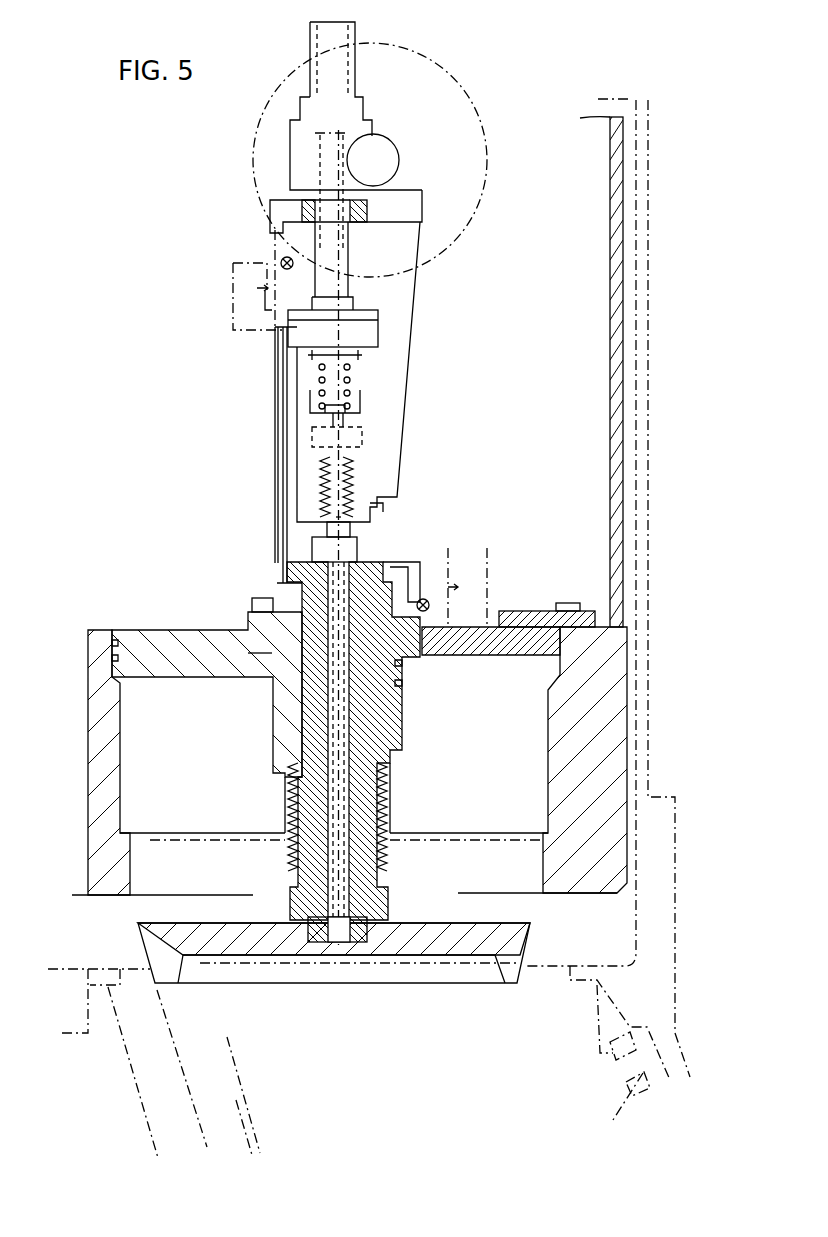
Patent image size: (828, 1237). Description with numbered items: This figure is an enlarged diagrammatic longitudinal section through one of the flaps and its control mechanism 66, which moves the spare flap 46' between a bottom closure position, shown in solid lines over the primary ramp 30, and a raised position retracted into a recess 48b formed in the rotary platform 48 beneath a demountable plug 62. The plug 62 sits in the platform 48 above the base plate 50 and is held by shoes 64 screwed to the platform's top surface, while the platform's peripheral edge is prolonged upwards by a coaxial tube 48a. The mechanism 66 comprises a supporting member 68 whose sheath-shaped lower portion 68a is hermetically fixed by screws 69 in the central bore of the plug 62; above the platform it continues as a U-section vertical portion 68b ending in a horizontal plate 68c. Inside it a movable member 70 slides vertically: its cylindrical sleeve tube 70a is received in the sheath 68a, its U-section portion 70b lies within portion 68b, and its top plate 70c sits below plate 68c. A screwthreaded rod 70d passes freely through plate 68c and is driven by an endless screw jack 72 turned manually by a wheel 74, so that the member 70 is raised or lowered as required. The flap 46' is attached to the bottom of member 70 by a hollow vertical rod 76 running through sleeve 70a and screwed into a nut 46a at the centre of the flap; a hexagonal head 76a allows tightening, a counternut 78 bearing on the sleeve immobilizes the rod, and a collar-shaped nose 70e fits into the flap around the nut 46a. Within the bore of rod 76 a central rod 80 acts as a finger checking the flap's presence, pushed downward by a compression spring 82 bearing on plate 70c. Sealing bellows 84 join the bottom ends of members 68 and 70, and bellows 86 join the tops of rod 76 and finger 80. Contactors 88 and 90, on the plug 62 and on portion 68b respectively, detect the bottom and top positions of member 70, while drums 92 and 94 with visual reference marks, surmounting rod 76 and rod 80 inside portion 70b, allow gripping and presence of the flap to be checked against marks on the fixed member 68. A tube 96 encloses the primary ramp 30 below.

The primary ramp 30 is at (230, 1131).
The spare flap 46' is at (334, 972).
The nut 46a is at (322, 940).
The rotary platform 48 is at (605, 683).
The coaxial tube 48a is at (613, 227).
The recess 48b is at (535, 885).
The base plate 50 is at (647, 968).
The demountable plug 62 is at (513, 783).
The shoe 64 is at (503, 613).
The control mechanism 66 is at (395, 413).
The supporting member 68 is at (295, 573).
The lower portion of supporting member 68a is at (265, 637).
The vertical portion of supporting member 68b is at (283, 470).
The horizontal plate 68c is at (387, 210).
The screw 69 is at (262, 600).
The movable member 70 is at (302, 745).
The lower portion of movable member 70a is at (350, 720).
The vertical portion of movable member 70b is at (292, 435).
The horizontal plate of movable member 70c is at (372, 333).
The screwthreaded rod 70d is at (343, 232).
The nose 70e is at (383, 910).
The endless screw jack 72 is at (374, 126).
The flywheel 74 is at (478, 108).
The hollow vertical rod 76 is at (300, 733).
The hexagonal head 76a is at (375, 515).
The counternut 78 is at (357, 548).
The central rod 80 is at (335, 487).
The compression spring 82 is at (320, 375).
The sealing bellows 84 is at (292, 857).
The sealing bellows 86 is at (357, 470).
The contactor 88 is at (488, 560).
The contactor 90 is at (240, 293).
The drum 92 is at (383, 508).
The drum 94 is at (363, 400).
The tube 96 is at (124, 1084).